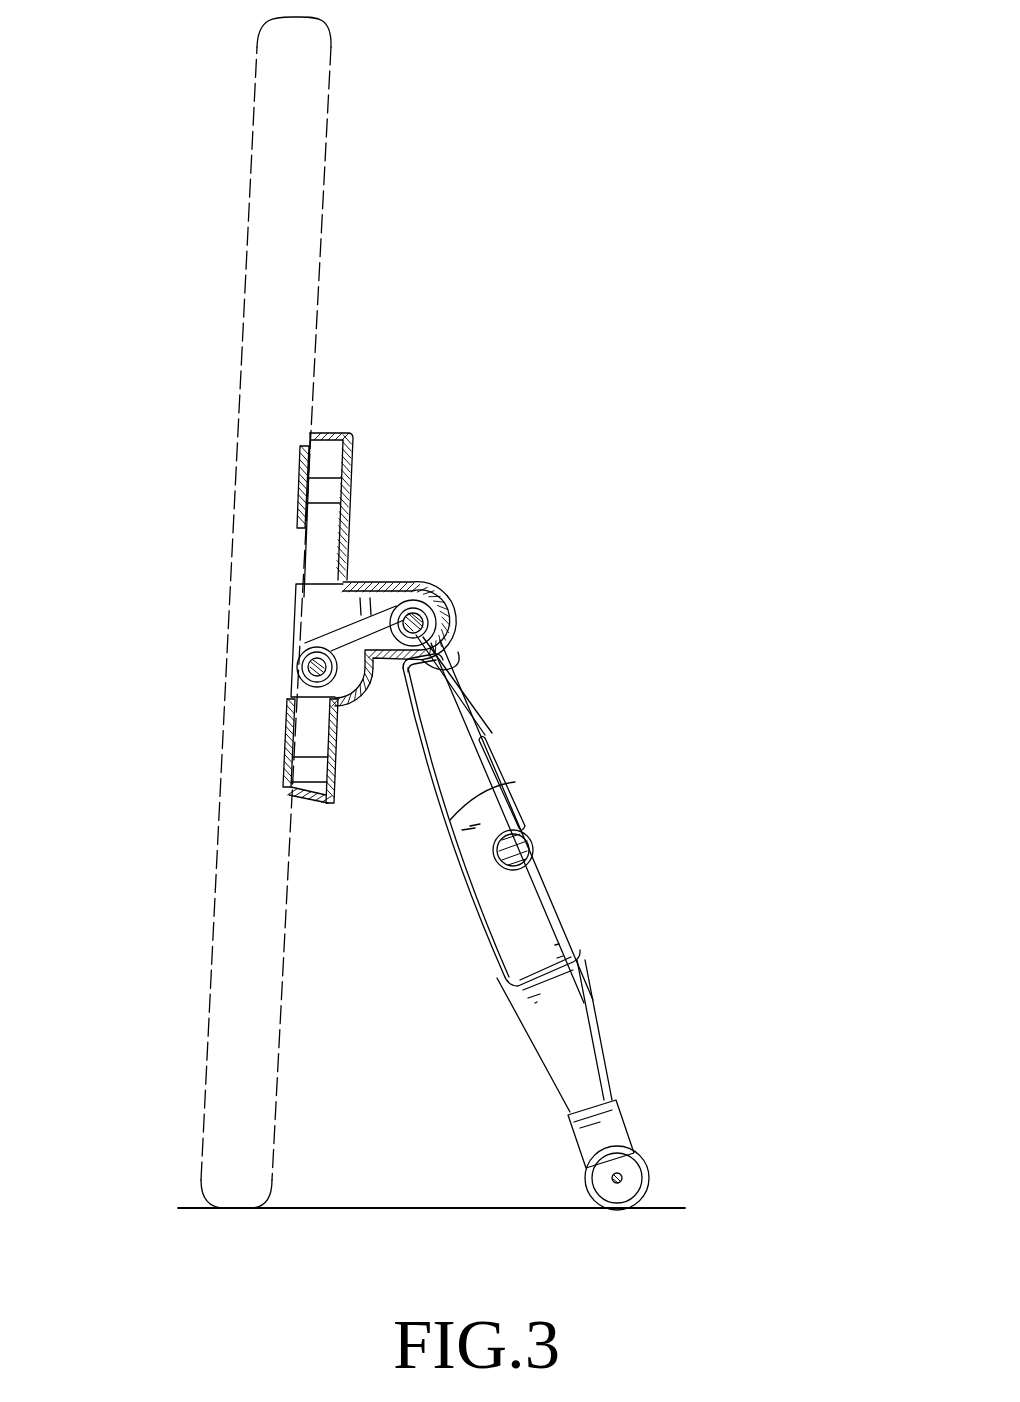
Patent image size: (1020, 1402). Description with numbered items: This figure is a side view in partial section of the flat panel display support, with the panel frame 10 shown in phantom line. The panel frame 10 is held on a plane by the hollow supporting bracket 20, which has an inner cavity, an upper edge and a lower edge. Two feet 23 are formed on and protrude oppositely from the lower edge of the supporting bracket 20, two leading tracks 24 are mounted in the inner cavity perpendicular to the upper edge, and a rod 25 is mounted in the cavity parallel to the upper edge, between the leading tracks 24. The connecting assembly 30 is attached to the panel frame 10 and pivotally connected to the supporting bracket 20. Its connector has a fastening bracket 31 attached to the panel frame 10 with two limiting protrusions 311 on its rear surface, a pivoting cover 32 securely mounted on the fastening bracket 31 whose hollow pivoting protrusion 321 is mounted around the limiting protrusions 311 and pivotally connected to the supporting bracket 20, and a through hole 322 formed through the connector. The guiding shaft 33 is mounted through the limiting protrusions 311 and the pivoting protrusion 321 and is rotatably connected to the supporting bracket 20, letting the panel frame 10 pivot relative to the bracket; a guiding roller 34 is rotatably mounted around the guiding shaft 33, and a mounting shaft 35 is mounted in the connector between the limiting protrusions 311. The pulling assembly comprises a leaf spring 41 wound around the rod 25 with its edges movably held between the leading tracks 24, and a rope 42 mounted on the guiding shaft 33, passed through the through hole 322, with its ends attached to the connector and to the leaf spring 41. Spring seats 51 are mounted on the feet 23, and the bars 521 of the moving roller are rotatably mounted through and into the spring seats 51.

The panel frame 10 is at (262, 160).
The supporting bracket 20 is at (500, 945).
The feet 23 is at (578, 1020).
The leading tracks 24 is at (500, 792).
The rod 25 is at (500, 862).
The connecting assembly 30 is at (368, 403).
The fastening bracket 31 is at (300, 478).
The pivoting cover 32 is at (352, 470).
The limiting protrusions 311 is at (353, 600).
The pivoting protrusion 321 is at (413, 583).
The through hole 322 is at (448, 644).
The guiding shaft 33 is at (436, 614).
The guiding roller 34 is at (462, 671).
The mounting shaft 35 is at (303, 670).
The leaf spring 41 is at (480, 722).
The rope 42 is at (522, 832).
The spring seats 51 is at (583, 1130).
The bars 521 is at (617, 1178).